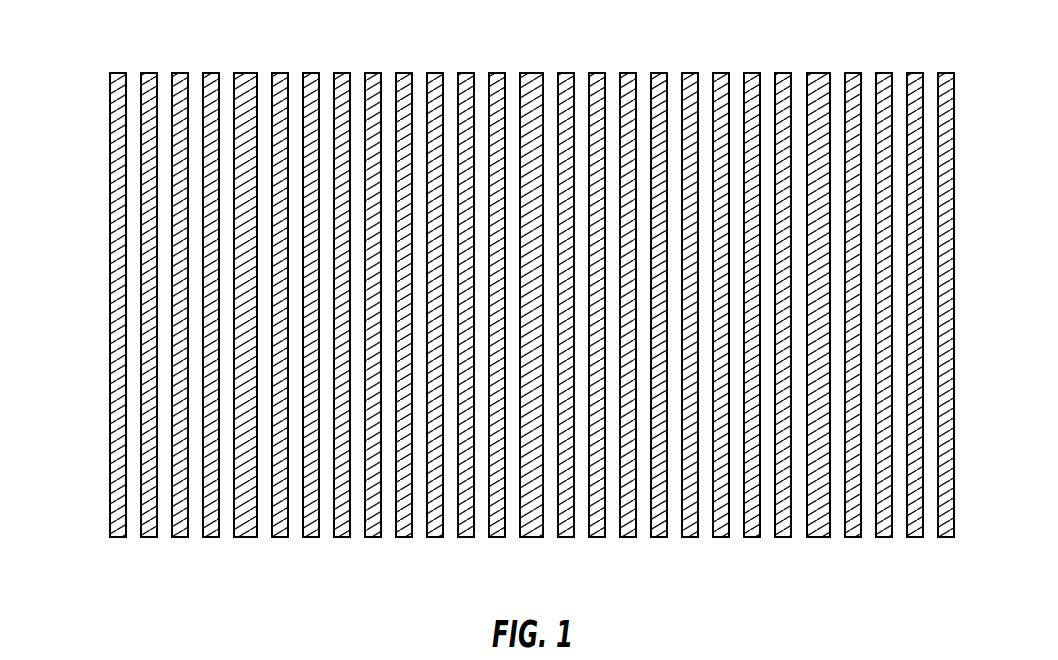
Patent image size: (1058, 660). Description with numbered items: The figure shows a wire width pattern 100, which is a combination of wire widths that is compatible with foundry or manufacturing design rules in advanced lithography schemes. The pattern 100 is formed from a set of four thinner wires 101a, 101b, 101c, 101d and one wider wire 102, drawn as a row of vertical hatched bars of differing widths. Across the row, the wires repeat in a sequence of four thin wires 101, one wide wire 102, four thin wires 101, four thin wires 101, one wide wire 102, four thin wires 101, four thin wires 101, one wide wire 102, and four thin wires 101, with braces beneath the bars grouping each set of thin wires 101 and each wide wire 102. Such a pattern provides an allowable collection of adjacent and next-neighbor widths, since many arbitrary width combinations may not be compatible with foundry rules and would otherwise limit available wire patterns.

The pattern 100 is at (501, 295).
The thin wires 101 is at (224, 538).
The thinner wire 101a is at (117, 73).
The thinner wire 101b is at (148, 73).
The thinner wire 101c is at (181, 73).
The thinner wire 101d is at (211, 73).
The wide wire 102 is at (262, 538).